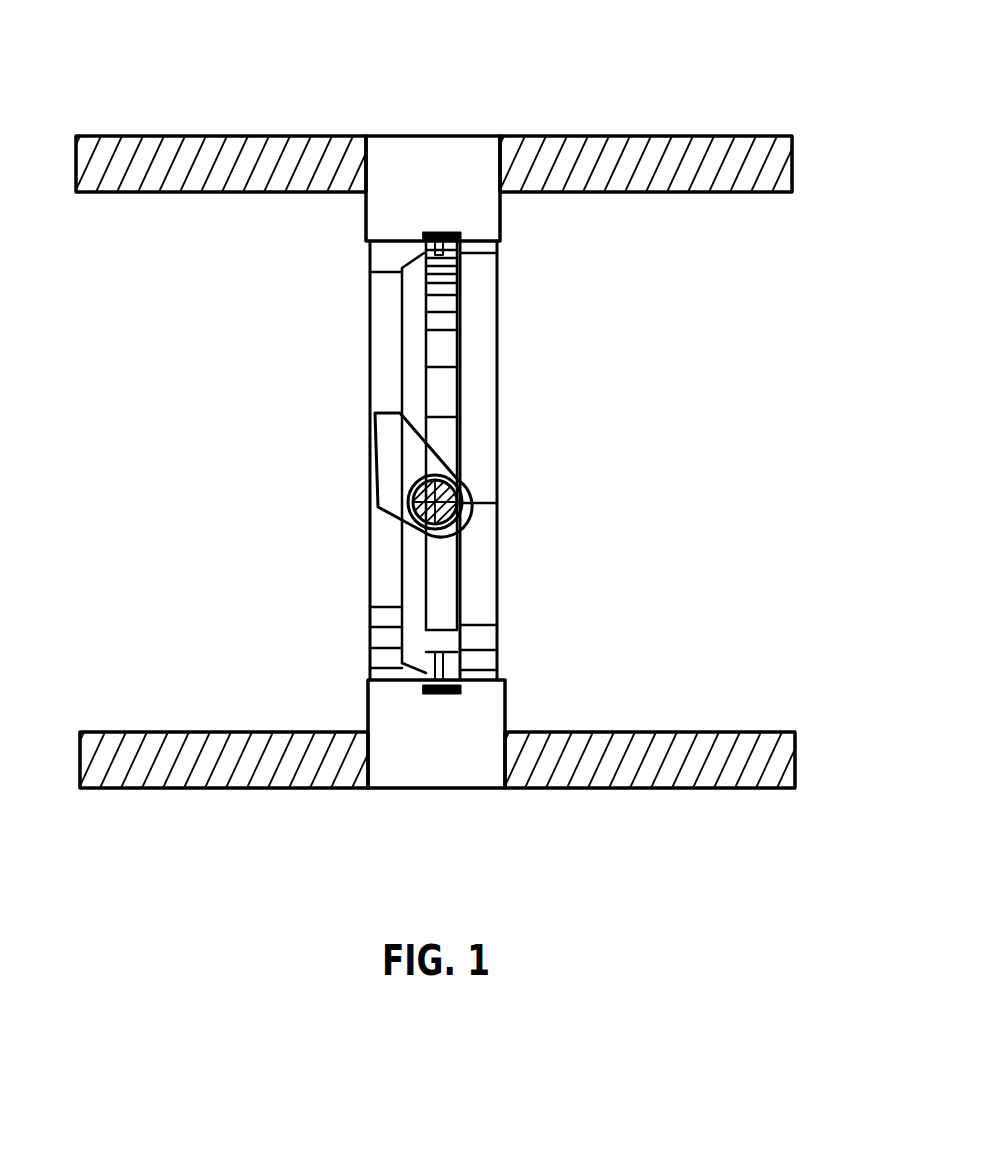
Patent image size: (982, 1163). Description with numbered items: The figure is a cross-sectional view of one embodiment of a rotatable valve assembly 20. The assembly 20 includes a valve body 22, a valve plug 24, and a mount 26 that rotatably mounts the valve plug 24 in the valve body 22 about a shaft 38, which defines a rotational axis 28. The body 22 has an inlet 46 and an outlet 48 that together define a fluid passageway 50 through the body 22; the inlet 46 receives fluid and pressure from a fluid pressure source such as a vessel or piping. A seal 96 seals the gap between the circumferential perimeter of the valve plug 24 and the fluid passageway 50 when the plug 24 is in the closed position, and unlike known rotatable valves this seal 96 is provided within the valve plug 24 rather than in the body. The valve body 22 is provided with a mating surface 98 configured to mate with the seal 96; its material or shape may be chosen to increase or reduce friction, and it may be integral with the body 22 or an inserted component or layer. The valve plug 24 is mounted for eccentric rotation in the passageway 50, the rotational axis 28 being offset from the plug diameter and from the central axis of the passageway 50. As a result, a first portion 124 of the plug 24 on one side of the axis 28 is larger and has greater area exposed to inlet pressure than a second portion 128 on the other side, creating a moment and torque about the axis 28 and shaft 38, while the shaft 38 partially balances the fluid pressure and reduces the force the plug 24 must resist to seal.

The rotatable valve assembly 20 is at (434, 120).
The valve body 22 is at (427, 175).
The valve plug 24 is at (420, 567).
The mount 26 is at (395, 470).
The rotational axis 28 is at (447, 498).
The shaft 38 is at (539, 487).
The inlet 46 is at (517, 397).
The outlet 48 is at (367, 338).
The fluid passageway 50 is at (183, 497).
The seal 96 is at (443, 253).
The mating surface 98 is at (433, 230).
The first portion 124 is at (477, 335).
The second portion 128 is at (477, 573).